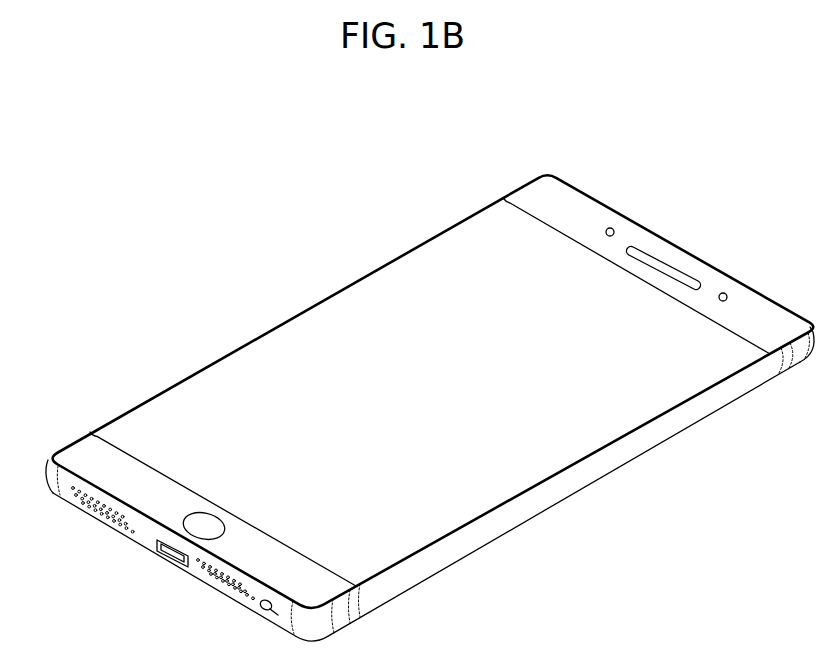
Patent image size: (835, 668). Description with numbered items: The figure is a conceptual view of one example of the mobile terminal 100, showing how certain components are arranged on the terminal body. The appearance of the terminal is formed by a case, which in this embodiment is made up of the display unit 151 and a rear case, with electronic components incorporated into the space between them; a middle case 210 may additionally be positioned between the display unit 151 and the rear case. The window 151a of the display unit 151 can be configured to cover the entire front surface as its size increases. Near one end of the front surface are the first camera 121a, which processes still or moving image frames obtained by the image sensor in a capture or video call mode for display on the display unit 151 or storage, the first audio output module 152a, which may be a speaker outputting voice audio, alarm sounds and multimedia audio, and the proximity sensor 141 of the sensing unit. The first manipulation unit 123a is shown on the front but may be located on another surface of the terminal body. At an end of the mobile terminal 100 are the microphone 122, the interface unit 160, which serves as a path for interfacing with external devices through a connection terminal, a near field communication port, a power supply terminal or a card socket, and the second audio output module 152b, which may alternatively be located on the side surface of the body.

The mobile terminal 100 is at (401, 231).
The first camera 121a is at (610, 227).
The first audio output module 152a is at (683, 272).
The proximity sensor 141 is at (723, 292).
The display unit 151 is at (748, 304).
The window 151a is at (198, 410).
The microphone 122 is at (152, 535).
The first manipulation unit 123a is at (183, 524).
The interface unit 160 is at (173, 568).
The second audio output module 152b is at (232, 596).
The middle case 210 is at (480, 538).